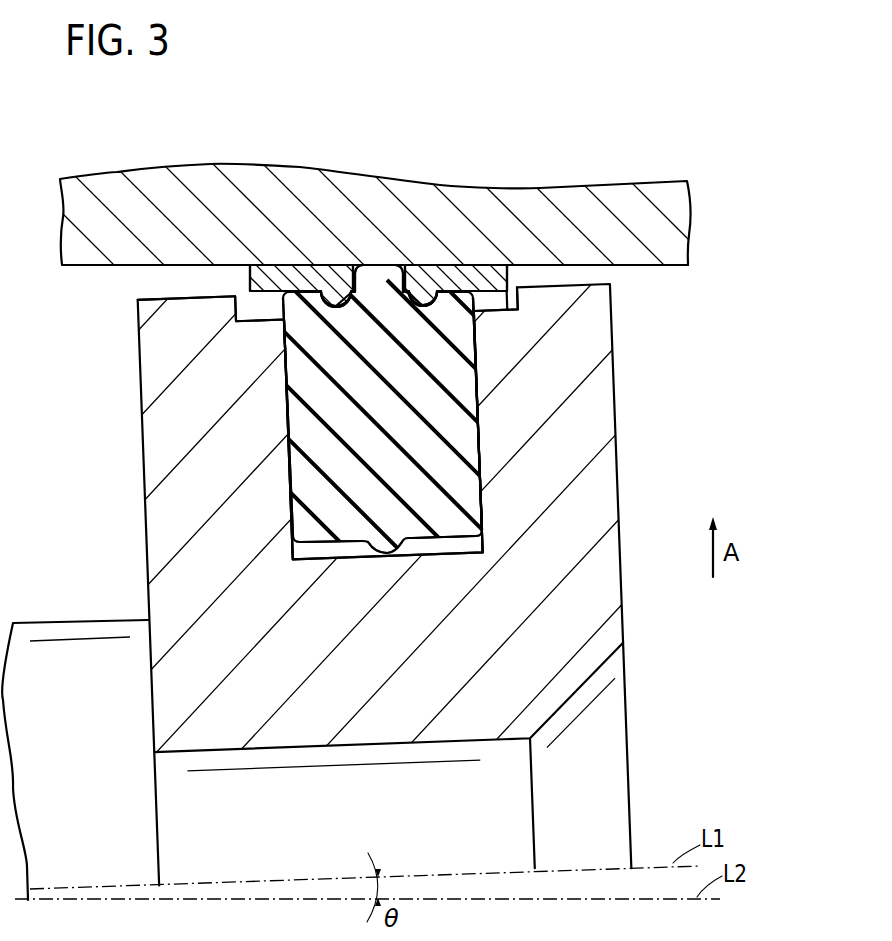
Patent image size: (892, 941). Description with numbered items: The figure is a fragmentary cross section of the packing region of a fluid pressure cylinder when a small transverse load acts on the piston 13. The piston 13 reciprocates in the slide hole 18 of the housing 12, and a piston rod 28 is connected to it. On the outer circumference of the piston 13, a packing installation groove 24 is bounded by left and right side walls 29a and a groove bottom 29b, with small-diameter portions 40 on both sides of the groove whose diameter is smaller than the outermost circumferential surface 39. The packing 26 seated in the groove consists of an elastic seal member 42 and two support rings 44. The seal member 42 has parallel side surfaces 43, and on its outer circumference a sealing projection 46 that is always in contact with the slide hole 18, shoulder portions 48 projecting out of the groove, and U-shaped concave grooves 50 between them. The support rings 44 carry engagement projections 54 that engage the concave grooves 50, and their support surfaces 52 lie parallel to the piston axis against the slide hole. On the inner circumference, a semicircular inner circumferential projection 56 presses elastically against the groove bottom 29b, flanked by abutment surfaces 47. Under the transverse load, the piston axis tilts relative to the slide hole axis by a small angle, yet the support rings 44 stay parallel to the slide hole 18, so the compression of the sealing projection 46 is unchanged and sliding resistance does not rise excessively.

The housing 12 is at (680, 222).
The piston 13 is at (604, 508).
The slide hole 18 is at (664, 268).
The packing installation groove 24 is at (285, 372).
The packing 26 is at (477, 345).
The piston rod 28 is at (150, 442).
The side walls 29a is at (289, 466).
The groove bottom 29b is at (414, 547).
The outermost circumferential surface 39 is at (178, 297).
The small-diameter portions 40 is at (237, 296).
The seal member 42 is at (463, 447).
The side surfaces 43 is at (286, 425).
The support rings 44 is at (277, 265).
The sealing projection 46 is at (378, 262).
The abutment surfaces 47 is at (319, 543).
The shoulder portions 48 is at (316, 298).
The concave grooves 50 is at (323, 303).
The support surfaces 52 is at (268, 265).
The engagement projections 54 is at (340, 300).
The inner circumferential projection 56 is at (378, 551).